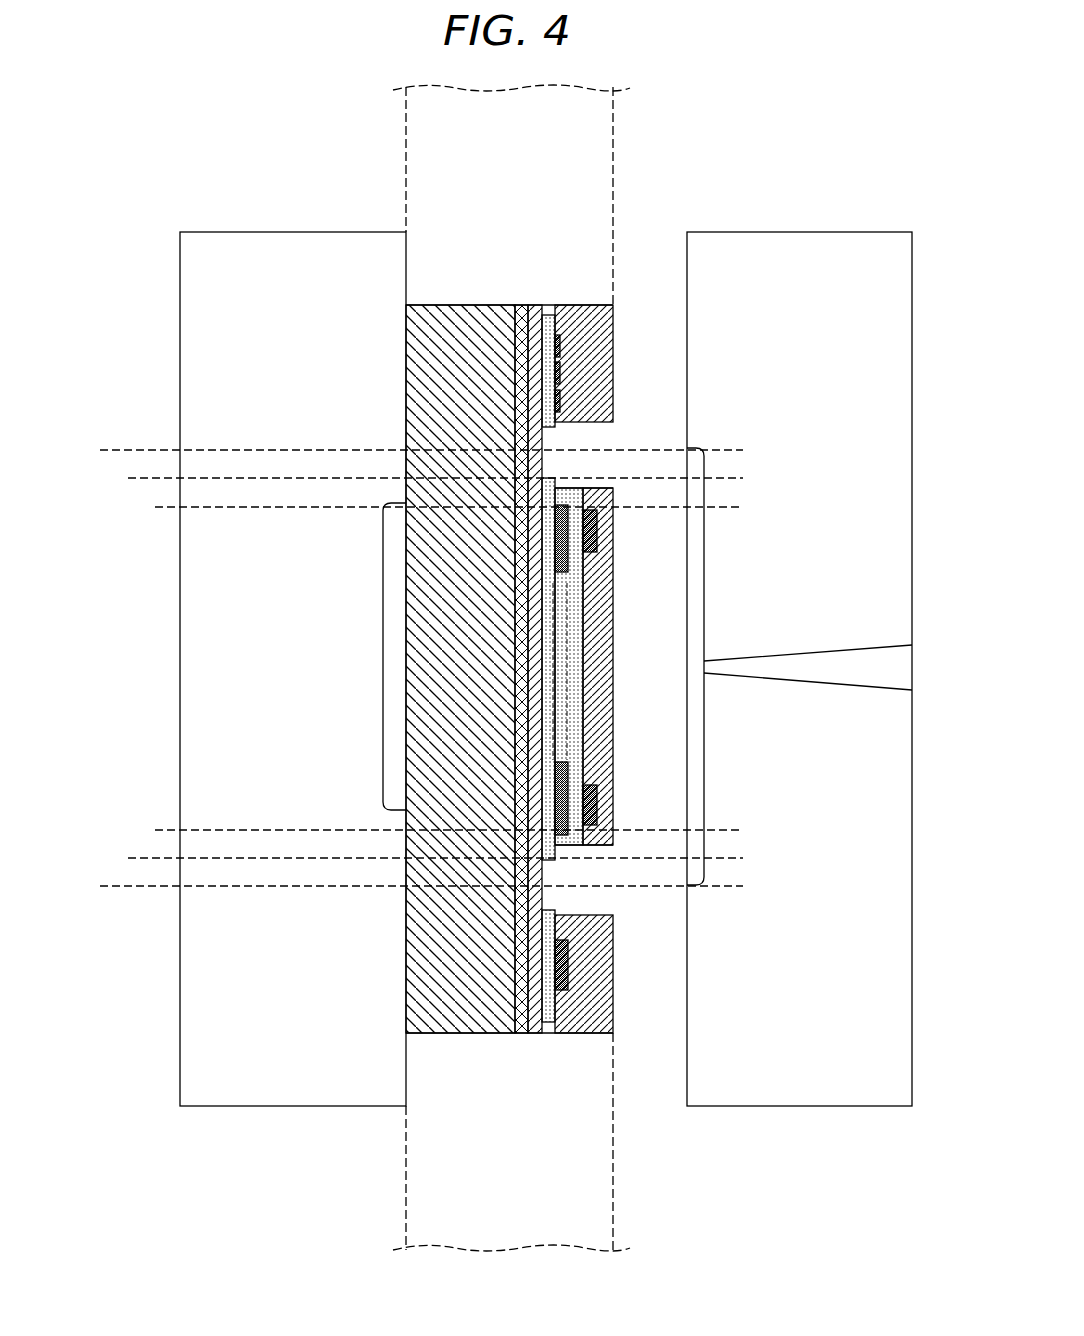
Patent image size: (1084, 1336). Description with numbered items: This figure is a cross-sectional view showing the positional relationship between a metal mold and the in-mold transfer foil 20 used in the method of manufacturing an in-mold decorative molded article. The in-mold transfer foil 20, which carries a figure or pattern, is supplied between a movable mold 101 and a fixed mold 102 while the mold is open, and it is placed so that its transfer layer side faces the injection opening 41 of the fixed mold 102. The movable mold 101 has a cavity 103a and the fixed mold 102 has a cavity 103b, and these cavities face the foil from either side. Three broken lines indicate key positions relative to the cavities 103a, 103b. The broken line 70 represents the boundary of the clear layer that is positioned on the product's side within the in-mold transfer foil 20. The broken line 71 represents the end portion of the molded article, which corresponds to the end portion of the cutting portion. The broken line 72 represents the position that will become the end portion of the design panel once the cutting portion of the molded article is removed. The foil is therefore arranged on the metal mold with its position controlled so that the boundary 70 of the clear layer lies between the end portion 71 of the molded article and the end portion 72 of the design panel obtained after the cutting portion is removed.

The in-mold transfer foil 20 is at (611, 296).
The injection opening 41 is at (878, 667).
The broken line (boundary of the clear layer) 70 is at (120, 478).
The broken line (end portion of the molded article) 71 is at (92, 450).
The broken line (end portion after cutting portion removed) 72 is at (146, 507).
The movable mold 101 is at (293, 1090).
The fixed mold 102 is at (800, 1087).
The cavity (of the movable mold) 103a is at (390, 668).
The cavity (of the fixed mold) 103b is at (690, 586).